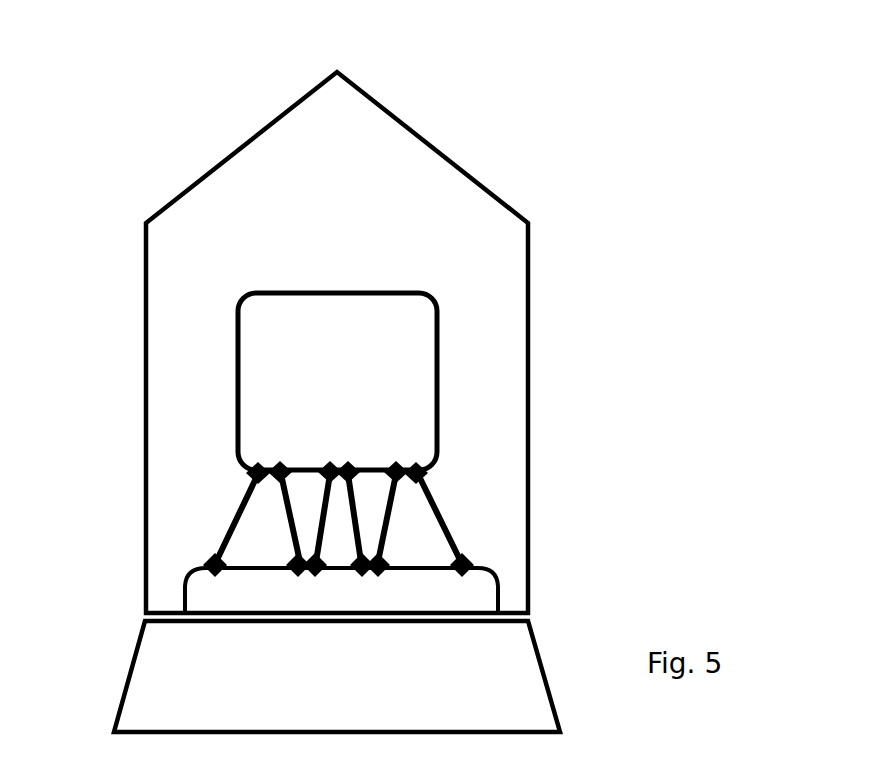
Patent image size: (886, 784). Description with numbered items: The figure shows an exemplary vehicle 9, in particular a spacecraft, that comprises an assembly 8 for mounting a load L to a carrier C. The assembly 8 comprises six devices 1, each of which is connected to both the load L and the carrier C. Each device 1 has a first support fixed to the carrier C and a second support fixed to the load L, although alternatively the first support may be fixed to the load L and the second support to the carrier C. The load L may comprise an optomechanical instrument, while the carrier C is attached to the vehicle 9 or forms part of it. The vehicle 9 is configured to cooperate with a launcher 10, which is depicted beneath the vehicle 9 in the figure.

The device 1 is at (308, 494).
The assembly 8 is at (424, 213).
The vehicle 9 is at (136, 162).
The launcher 10 is at (150, 693).
The load L is at (260, 343).
The carrier C is at (197, 593).